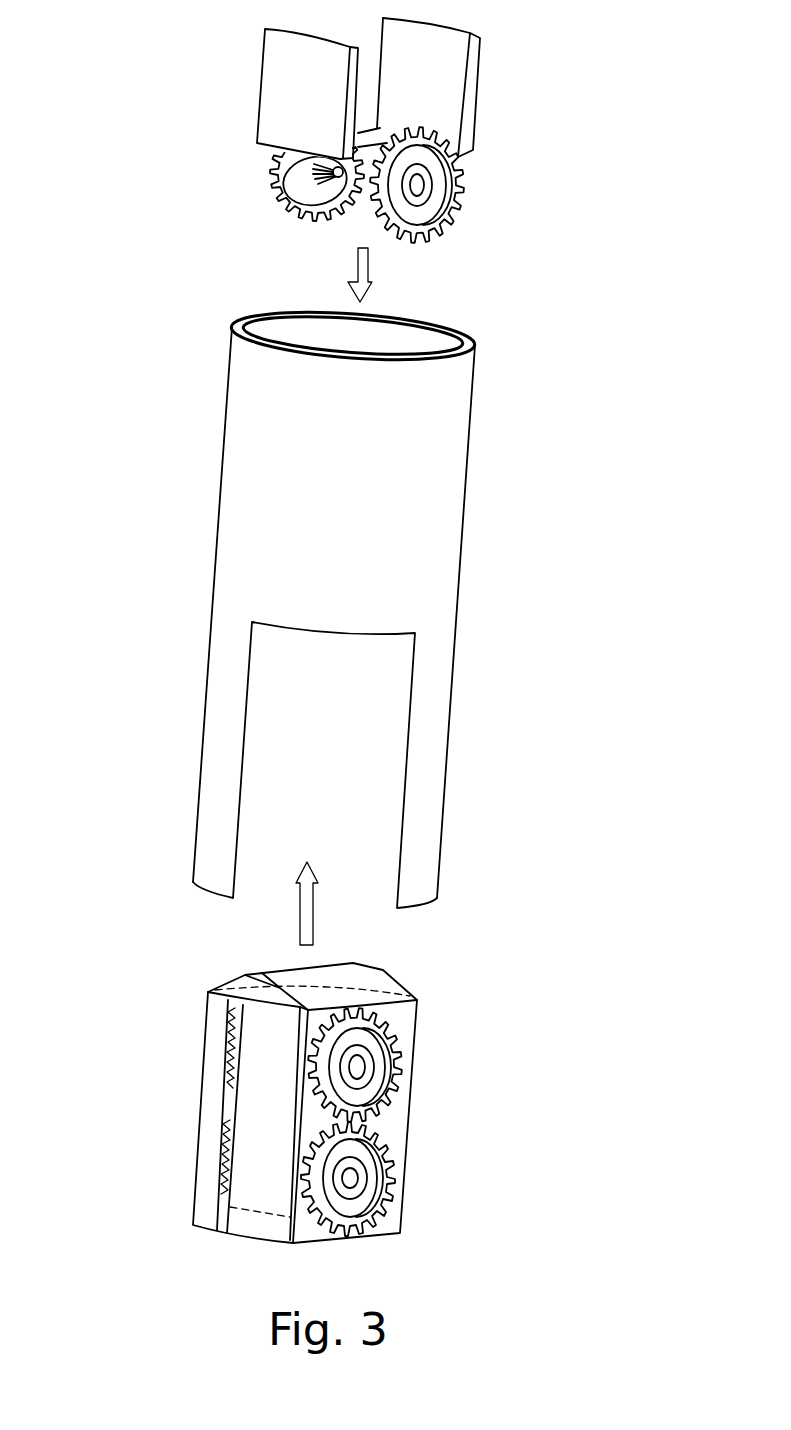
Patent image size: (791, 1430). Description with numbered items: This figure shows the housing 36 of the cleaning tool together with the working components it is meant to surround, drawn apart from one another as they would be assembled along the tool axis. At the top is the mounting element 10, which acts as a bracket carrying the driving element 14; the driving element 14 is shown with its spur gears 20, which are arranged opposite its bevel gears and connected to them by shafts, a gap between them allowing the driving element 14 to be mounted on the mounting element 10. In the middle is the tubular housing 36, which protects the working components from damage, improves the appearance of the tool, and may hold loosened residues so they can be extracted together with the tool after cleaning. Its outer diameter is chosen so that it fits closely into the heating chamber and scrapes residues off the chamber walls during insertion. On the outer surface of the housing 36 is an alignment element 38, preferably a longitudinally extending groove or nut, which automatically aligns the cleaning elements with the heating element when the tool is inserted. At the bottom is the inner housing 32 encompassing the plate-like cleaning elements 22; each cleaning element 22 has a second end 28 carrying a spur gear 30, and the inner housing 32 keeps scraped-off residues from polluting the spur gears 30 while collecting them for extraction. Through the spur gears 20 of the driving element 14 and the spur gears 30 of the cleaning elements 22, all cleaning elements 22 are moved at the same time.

The mounting element 10 is at (445, 77).
The driving element 14 is at (490, 185).
The spur gear 20 is at (430, 178).
The housing 36 is at (469, 413).
The alignment element 38 is at (243, 747).
The inner housing 32 is at (373, 980).
The cleaning element 22 is at (477, 1122).
The second end 28 is at (477, 1122).
The spur gear 30 is at (377, 1065).